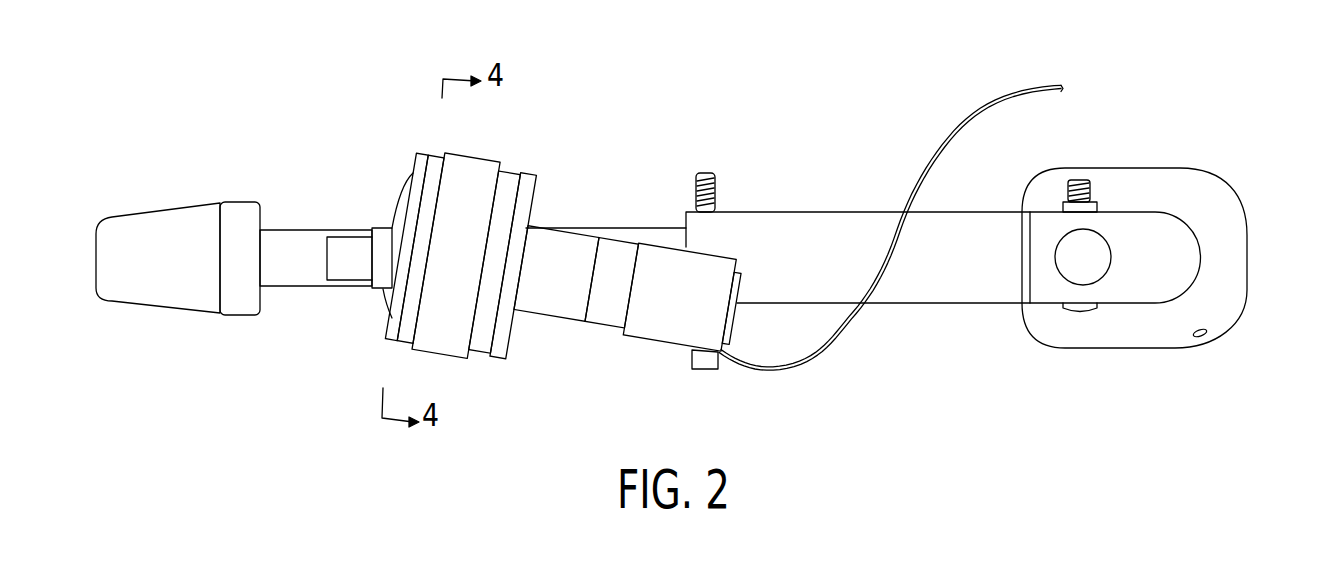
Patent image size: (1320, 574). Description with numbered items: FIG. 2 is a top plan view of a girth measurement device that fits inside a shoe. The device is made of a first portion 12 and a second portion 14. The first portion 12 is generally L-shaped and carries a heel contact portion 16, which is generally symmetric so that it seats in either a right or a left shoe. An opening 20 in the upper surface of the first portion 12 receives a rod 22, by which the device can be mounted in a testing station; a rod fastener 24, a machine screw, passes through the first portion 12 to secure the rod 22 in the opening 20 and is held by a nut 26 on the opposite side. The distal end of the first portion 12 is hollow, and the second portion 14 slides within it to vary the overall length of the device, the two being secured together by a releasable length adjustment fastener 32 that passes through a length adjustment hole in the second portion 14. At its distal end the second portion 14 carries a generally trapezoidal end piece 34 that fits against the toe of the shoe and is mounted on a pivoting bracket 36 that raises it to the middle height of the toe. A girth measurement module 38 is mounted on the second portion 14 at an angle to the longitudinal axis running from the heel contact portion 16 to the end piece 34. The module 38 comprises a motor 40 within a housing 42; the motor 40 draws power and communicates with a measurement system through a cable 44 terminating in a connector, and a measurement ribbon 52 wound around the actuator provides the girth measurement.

The first portion 12 is at (1157, 257).
The second portion 14 is at (244, 250).
The heel contact portion 16 is at (1232, 272).
The opening 20 is at (1113, 263).
The rod 22 is at (1090, 257).
The rod fastener 24 is at (1070, 310).
The nut 26 is at (1062, 205).
The length adjustment fastener 32 is at (698, 360).
The end piece 34 is at (121, 273).
The bracket 36 is at (298, 270).
The girth measurement module 38 is at (545, 214).
The motor 40 is at (618, 255).
The housing 42 is at (438, 172).
The cable 44 is at (917, 188).
The measurement ribbon 52 is at (483, 170).